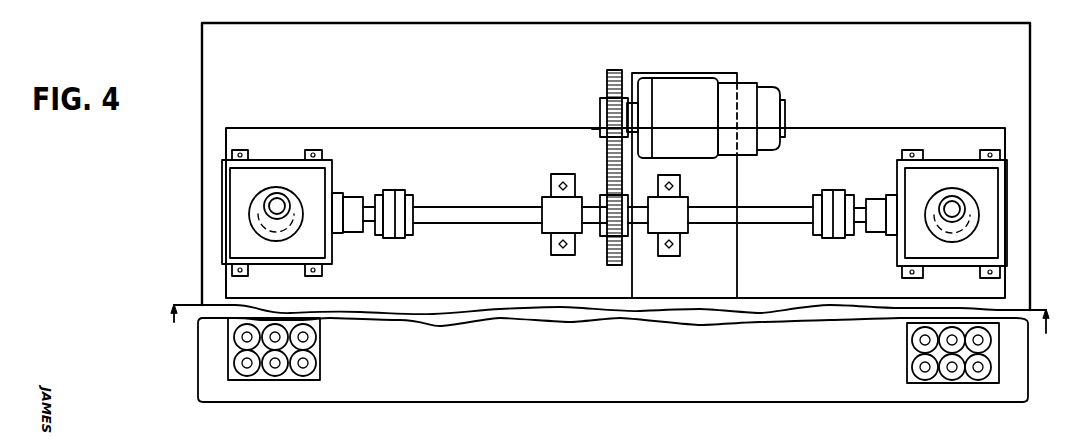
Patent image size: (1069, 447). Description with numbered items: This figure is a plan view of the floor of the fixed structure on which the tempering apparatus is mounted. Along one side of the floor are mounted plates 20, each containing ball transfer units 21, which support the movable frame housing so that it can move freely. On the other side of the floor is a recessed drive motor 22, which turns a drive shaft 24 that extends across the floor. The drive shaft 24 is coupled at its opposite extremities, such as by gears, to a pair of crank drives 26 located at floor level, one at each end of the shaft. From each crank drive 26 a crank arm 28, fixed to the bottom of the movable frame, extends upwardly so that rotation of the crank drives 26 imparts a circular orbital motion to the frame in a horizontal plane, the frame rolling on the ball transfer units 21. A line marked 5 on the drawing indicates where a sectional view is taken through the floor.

The section line 5- 5 is at (610, 329).
The plates 20 is at (320, 329).
The ball transfer units 21 is at (303, 337).
The drive motor 22 is at (706, 185).
The drive shaft 24 is at (472, 207).
The crank drives 26 is at (255, 208).
The crank arm 28 is at (276, 203).